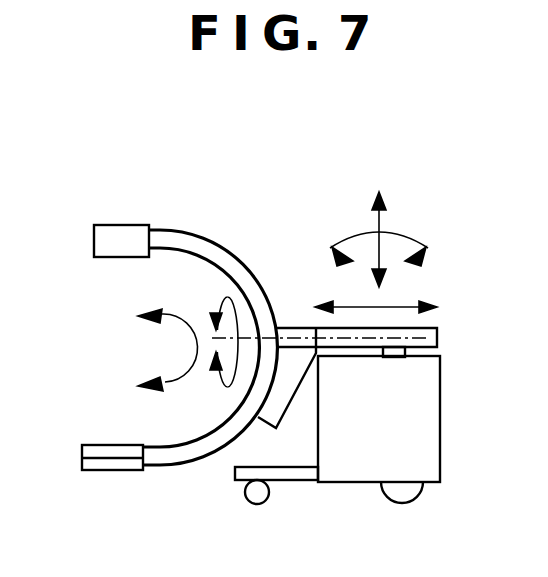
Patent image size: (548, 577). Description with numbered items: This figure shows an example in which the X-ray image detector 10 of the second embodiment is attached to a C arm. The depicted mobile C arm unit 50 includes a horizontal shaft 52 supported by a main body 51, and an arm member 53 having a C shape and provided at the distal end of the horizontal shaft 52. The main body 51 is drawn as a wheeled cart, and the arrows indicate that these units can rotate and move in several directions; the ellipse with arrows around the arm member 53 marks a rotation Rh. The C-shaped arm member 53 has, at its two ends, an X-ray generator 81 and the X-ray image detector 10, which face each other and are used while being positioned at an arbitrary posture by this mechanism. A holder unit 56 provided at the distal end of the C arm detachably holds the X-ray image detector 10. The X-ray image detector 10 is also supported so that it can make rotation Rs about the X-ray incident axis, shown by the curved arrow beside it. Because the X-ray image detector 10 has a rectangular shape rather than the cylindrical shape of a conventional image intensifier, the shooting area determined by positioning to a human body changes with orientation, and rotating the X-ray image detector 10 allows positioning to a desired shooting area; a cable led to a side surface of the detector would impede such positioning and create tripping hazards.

The mobile C arm unit 50 is at (421, 178).
The main body 51 is at (407, 413).
The horizontal shaft 52 is at (423, 338).
The arm member 53 is at (213, 250).
The X-ray generator 81 is at (100, 240).
The X-ray image detector 10 is at (90, 453).
The holder unit 56 is at (103, 463).
The rotation about horizontal axis Rh is at (220, 298).
The rotation about the X-ray incident axis Rs is at (175, 384).